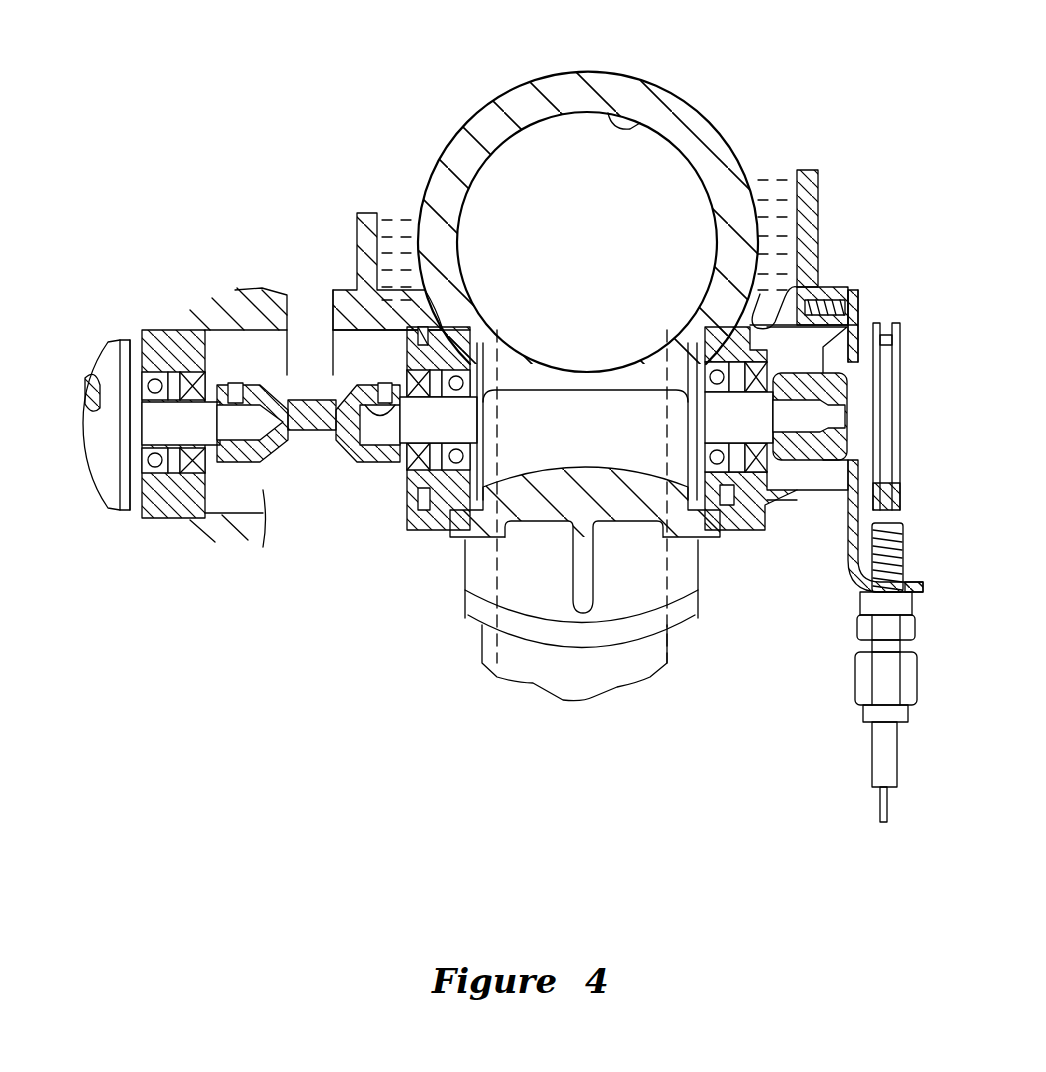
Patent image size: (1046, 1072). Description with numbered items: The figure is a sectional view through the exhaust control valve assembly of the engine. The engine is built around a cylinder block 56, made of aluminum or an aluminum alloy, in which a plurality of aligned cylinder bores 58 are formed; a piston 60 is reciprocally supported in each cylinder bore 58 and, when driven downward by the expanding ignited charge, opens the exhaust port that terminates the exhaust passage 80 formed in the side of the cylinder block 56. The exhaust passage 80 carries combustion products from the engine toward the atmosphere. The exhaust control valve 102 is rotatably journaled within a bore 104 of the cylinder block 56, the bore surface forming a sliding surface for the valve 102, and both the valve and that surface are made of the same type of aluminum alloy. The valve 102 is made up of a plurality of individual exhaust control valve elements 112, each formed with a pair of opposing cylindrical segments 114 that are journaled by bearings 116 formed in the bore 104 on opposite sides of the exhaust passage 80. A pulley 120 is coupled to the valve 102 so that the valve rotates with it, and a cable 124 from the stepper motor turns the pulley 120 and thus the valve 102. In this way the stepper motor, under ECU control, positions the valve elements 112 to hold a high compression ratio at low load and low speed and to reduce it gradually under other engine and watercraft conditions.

The cylinder block 56 is at (468, 101).
The cylinder bore 58 is at (643, 125).
The piston 60 is at (532, 137).
The exhaust passage 80 is at (500, 640).
The exhaust control valve 102 is at (540, 360).
The bore 104 is at (607, 470).
The exhaust control valve element 112 is at (622, 360).
The cylindrical segment 114 is at (377, 460).
The bearing 116 is at (442, 520).
The pulley 120 is at (913, 320).
The cable 124 is at (878, 795).